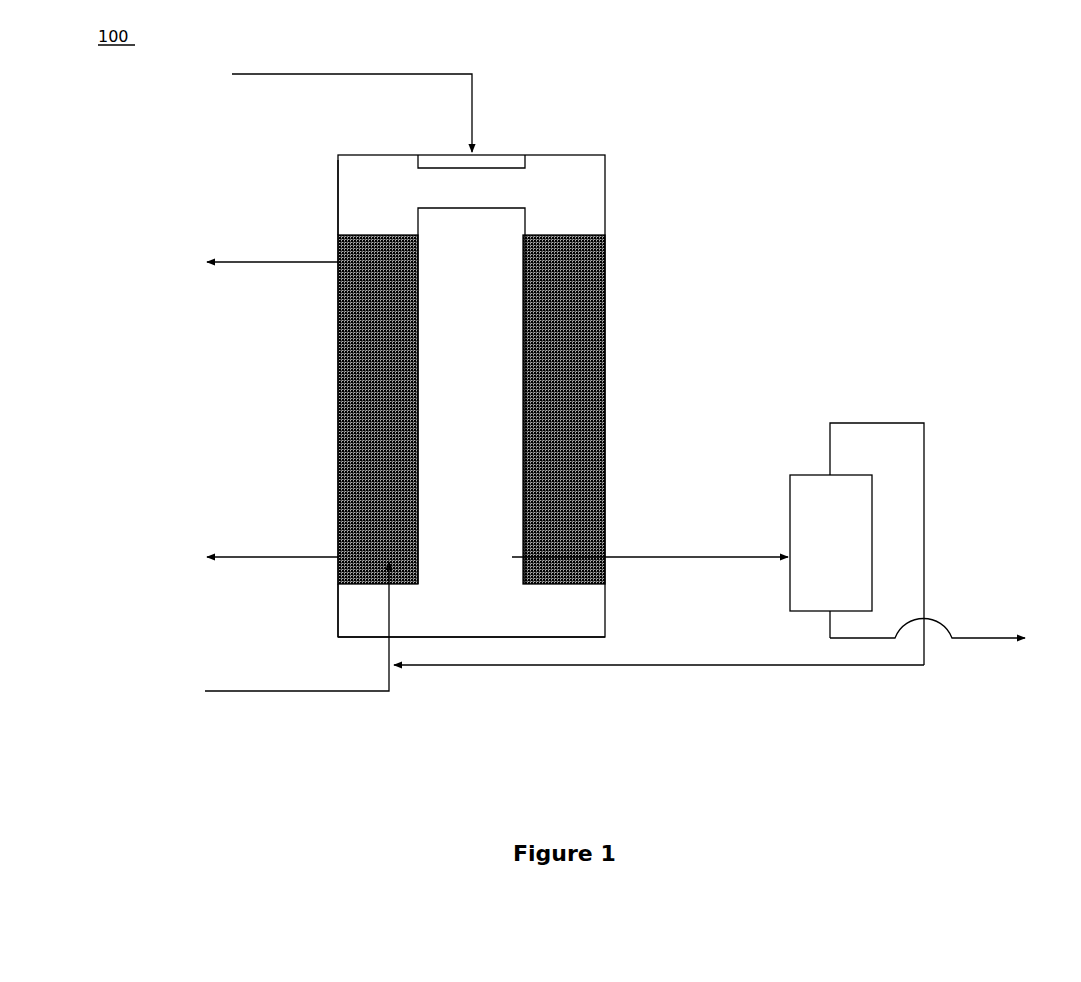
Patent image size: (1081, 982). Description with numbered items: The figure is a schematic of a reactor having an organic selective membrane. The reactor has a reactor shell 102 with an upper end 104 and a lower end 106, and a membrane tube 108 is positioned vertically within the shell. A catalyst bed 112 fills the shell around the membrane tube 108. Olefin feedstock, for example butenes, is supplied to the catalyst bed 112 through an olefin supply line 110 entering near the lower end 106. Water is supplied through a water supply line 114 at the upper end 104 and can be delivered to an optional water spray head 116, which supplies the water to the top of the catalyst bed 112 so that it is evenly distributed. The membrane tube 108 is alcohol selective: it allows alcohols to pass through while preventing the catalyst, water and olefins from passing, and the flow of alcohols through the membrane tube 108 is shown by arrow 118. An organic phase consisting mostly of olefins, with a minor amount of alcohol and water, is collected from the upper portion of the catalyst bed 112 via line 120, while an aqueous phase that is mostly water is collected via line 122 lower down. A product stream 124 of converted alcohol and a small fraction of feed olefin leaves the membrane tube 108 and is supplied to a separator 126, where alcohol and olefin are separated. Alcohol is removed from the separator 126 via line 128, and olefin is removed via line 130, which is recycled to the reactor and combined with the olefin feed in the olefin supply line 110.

The reactor shell 102 is at (605, 188).
The upper end 104 is at (336, 190).
The lower end 106 is at (336, 628).
The membrane tube 108 is at (604, 385).
The olefin supply line 110 is at (306, 692).
The catalyst bed 112 is at (604, 286).
The water supply line 114 is at (418, 77).
The water spray head 116 is at (525, 162).
The arrow showing flow of alcohols 118 is at (443, 367).
The line 120 is at (310, 263).
The line 122 is at (310, 558).
The product stream 124 is at (750, 560).
The separator 126 is at (790, 503).
The line 128 is at (965, 640).
The line 130 is at (924, 530).